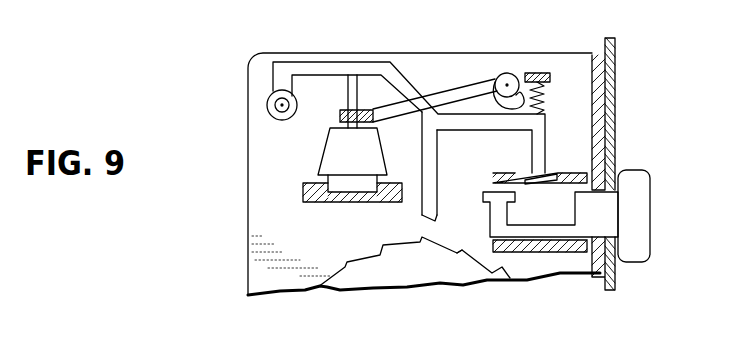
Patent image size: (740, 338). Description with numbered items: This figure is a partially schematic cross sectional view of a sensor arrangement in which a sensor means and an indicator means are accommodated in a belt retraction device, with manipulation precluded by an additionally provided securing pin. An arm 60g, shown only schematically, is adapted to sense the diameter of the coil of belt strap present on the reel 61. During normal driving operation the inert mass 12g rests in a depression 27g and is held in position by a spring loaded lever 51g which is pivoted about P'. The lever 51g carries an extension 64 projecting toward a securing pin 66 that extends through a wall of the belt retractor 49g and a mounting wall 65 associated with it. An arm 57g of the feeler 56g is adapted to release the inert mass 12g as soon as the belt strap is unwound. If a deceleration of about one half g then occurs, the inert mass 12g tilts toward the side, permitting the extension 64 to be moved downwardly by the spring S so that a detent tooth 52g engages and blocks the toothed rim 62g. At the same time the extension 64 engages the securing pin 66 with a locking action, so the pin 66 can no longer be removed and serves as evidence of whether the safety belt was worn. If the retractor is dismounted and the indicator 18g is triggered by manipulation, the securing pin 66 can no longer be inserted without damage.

The inert mass 12g is at (335, 155).
The indicator 18g is at (518, 266).
The depression 27g is at (349, 204).
The housing 49g is at (572, 87).
The spring loaded lever 51g is at (453, 152).
The detent tooth 52g is at (437, 222).
The feeler 56g is at (415, 77).
The arm 57g is at (340, 112).
The arm 60g is at (488, 78).
The reel 61 is at (408, 270).
The toothed rim 62g is at (463, 254).
The extension 64 is at (540, 150).
The mounting wall 65 is at (612, 148).
The securing pin 66 is at (642, 223).
The spring S is at (543, 103).
The pivot P' is at (257, 110).